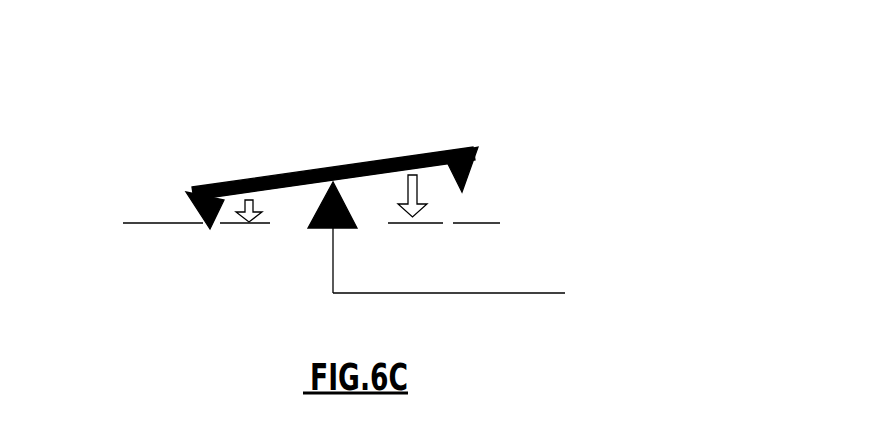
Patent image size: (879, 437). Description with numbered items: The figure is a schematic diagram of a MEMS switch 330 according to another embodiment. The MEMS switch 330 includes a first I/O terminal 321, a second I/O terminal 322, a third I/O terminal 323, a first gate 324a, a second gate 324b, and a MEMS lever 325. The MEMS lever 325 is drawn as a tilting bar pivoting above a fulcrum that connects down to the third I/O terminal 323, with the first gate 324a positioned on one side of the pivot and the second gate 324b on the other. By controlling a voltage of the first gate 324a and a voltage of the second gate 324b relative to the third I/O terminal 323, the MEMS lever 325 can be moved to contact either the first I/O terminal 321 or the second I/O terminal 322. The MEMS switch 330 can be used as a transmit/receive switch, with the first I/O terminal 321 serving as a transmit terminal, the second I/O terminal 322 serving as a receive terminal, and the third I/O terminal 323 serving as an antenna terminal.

The first I/O terminal 321 is at (138, 222).
The second I/O terminal 322 is at (482, 223).
The third I/O terminal 323 is at (553, 295).
The first gate 324a is at (227, 223).
The second gate 324b is at (435, 223).
The MEMS lever 325 is at (420, 153).
The MEMS switch 330 is at (537, 186).